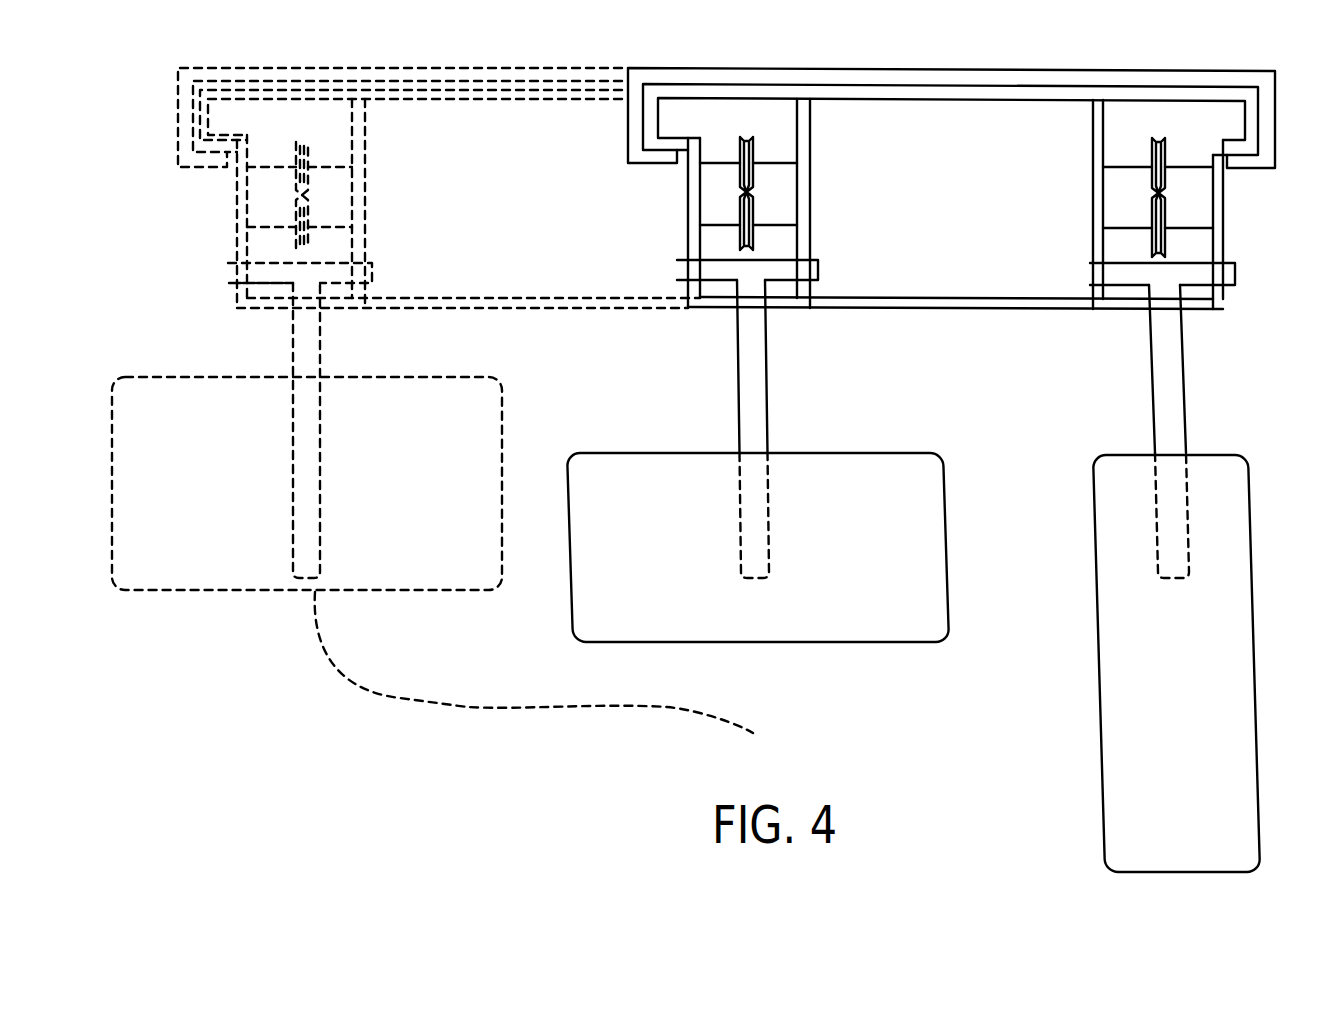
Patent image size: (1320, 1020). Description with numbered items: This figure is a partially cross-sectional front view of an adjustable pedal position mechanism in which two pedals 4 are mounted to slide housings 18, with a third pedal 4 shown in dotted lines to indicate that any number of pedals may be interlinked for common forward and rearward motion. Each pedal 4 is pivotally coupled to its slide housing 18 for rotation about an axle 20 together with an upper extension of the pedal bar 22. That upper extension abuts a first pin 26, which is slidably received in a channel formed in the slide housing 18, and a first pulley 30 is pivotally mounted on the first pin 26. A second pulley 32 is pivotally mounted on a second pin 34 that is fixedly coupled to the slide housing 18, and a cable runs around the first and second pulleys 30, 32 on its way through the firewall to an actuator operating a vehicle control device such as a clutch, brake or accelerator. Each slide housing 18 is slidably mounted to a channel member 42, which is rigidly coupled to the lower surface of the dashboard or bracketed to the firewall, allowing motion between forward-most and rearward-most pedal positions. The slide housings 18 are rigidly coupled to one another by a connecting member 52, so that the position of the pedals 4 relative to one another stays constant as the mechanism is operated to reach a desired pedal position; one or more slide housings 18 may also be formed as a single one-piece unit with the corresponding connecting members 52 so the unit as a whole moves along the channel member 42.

The pedal 4 is at (1120, 722).
The slide housing 18 is at (688, 207).
The axle 20 is at (778, 268).
The pedal bar 22 is at (769, 410).
The first pin 26 is at (707, 227).
The first pulley 30 is at (757, 223).
The second pulley 32 is at (755, 158).
The second pin 34 is at (717, 167).
The channel member 42 is at (945, 56).
The connecting member 52 is at (838, 307).